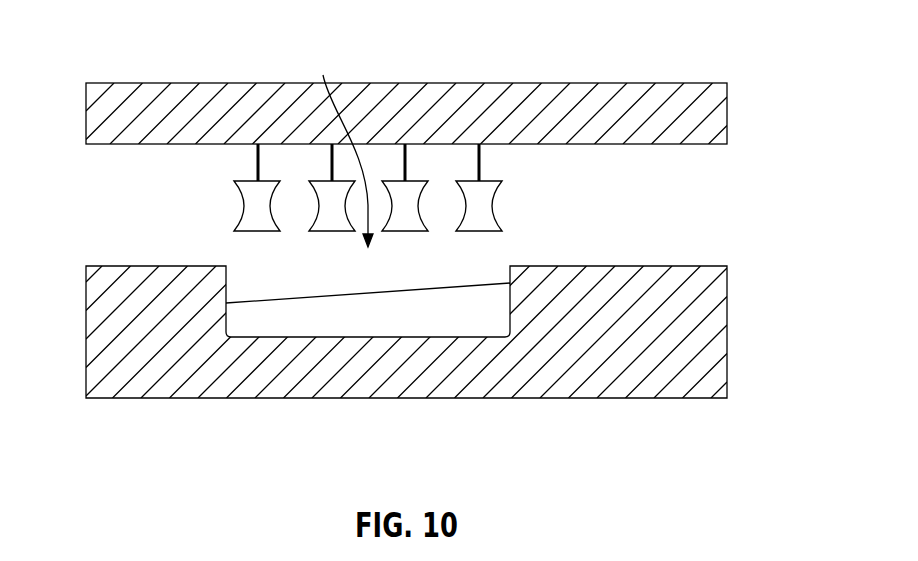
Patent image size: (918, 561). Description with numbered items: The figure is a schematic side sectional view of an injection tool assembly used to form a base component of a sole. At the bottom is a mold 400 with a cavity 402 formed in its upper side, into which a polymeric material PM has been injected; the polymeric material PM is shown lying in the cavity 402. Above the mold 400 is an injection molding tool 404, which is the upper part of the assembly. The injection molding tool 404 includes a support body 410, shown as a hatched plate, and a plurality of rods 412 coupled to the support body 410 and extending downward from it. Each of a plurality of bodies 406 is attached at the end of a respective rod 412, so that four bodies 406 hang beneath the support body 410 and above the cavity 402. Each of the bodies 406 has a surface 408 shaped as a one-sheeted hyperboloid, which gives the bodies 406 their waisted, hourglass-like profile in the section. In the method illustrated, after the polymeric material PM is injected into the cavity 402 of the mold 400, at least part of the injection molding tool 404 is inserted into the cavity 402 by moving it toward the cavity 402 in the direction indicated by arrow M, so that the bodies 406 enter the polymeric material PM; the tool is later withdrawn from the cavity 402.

The mold 400 is at (720, 348).
The cavity 402 is at (510, 302).
The injection molding tool 404 is at (575, 92).
The bodies 406 is at (268, 218).
The surface 408 is at (312, 188).
The support body 410 is at (103, 102).
The rods 412 is at (330, 148).
The arrow M is at (343, 144).
The polymeric material PM is at (363, 293).